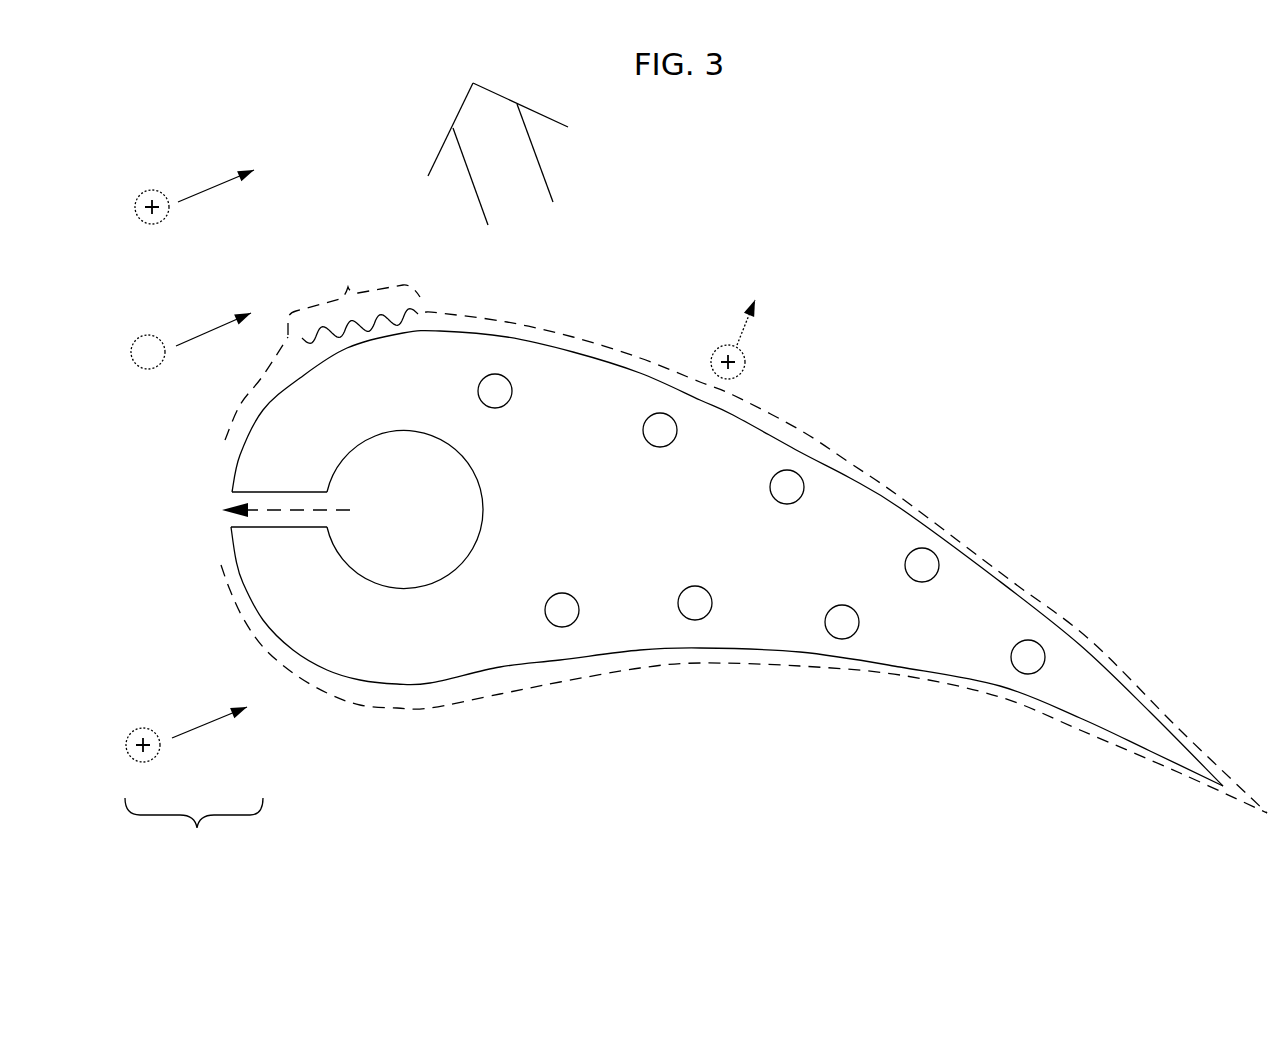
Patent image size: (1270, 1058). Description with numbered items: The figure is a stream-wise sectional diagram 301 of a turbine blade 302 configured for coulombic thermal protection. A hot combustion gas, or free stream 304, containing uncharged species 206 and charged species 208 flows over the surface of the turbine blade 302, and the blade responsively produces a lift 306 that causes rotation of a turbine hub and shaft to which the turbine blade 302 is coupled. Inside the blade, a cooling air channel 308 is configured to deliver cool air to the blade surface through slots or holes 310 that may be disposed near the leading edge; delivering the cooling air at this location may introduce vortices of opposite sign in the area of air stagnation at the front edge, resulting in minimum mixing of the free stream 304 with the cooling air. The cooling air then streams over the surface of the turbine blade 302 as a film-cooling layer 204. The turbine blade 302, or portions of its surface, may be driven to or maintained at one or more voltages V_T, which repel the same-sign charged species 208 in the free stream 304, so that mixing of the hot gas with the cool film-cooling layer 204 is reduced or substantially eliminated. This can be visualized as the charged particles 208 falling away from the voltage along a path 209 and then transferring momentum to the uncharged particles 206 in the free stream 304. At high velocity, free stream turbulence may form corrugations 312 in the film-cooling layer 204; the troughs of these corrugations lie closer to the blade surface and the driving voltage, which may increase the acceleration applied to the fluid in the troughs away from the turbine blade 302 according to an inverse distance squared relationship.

The film-cooling layer 204 is at (580, 336).
The uncharged species 206 is at (147, 335).
The charged species 208 is at (150, 190).
The path 209 is at (742, 326).
The sectional diagram 301 is at (1052, 216).
The turbine blade 302 is at (648, 650).
The free stream 304 is at (194, 831).
The lift 306 is at (552, 162).
The cooling air channel 308 is at (484, 500).
The slots or holes 310 is at (230, 528).
The corrugations 312 is at (354, 303).